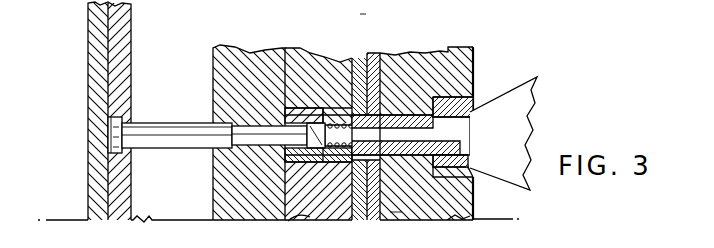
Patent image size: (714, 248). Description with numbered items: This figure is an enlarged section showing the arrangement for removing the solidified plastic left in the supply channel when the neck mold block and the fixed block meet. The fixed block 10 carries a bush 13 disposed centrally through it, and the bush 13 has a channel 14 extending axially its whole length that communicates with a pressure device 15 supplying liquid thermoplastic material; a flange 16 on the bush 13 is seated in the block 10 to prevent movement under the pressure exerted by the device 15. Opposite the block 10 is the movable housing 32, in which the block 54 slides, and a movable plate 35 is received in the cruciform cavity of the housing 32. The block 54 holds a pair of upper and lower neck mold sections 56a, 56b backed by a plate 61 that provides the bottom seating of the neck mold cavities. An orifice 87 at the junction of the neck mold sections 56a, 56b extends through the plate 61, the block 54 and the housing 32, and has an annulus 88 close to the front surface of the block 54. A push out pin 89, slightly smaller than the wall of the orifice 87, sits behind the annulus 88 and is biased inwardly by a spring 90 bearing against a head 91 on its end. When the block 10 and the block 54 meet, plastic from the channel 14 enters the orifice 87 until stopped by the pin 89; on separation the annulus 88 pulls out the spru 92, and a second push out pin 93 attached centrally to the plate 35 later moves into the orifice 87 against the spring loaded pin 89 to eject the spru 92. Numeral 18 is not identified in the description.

The block 10 is at (462, 67).
The bush 13 is at (460, 100).
The channel 14 is at (408, 115).
The pressure device 15 is at (513, 113).
The flange 16 is at (472, 182).
The bore 18 is at (363, 14).
The housing 32 is at (235, 70).
The movable plate 35 is at (100, 90).
The block 54 is at (325, 182).
The upper neck mold section 56a is at (370, 60).
The lower neck mold section 56b is at (373, 196).
The plate 61 is at (352, 77).
The orifice 87 is at (293, 137).
The annulus 88 is at (396, 212).
The push out pin 89 is at (312, 152).
The spring 90 is at (338, 138).
The head 91 is at (315, 137).
The spru 92 is at (427, 117).
The second push out pin 93 is at (177, 137).